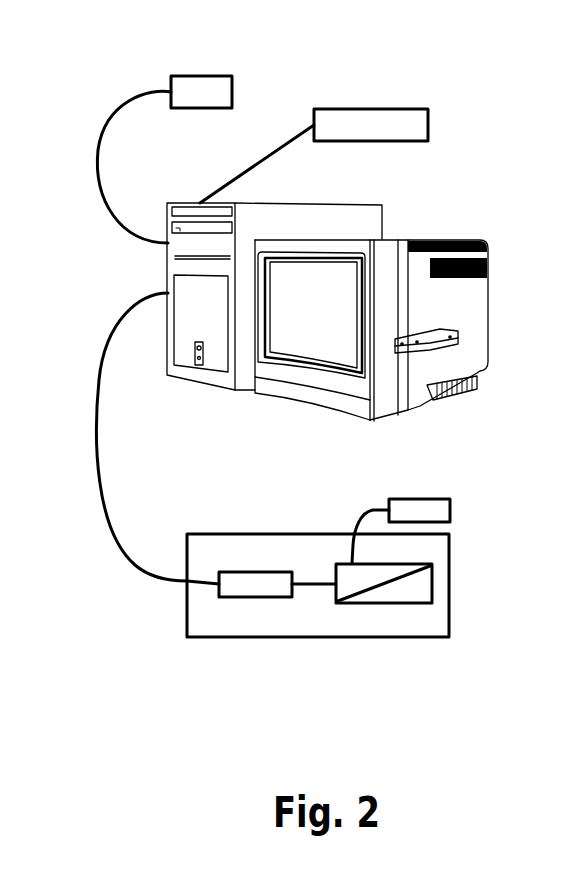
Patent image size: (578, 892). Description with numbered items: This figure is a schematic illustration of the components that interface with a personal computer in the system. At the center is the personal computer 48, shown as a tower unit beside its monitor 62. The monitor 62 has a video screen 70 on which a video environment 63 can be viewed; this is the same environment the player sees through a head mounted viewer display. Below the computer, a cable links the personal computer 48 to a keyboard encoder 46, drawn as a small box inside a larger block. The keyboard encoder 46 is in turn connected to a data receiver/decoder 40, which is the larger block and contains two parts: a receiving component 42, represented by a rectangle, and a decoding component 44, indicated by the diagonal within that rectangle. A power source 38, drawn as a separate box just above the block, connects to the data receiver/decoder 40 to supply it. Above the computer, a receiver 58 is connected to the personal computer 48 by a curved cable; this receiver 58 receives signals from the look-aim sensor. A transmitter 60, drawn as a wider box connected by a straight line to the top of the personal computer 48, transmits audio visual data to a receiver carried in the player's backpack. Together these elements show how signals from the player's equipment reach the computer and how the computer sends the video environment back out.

The power source 38 is at (452, 510).
The data receiver/decoder 40 is at (395, 607).
The receiving component 42 is at (418, 587).
The decoding component 44 is at (384, 572).
The keyboard encoder 46 is at (248, 606).
The personal computer 48 is at (168, 268).
The receiver 58 is at (213, 77).
The transmitter 60 is at (407, 110).
The monitor 62 is at (385, 252).
The video environment 63 is at (404, 259).
The video screen 70 is at (303, 277).